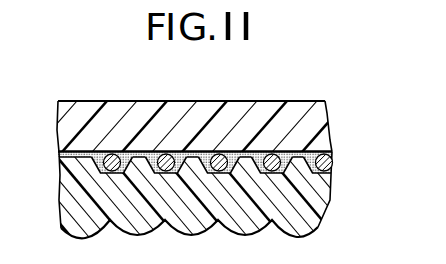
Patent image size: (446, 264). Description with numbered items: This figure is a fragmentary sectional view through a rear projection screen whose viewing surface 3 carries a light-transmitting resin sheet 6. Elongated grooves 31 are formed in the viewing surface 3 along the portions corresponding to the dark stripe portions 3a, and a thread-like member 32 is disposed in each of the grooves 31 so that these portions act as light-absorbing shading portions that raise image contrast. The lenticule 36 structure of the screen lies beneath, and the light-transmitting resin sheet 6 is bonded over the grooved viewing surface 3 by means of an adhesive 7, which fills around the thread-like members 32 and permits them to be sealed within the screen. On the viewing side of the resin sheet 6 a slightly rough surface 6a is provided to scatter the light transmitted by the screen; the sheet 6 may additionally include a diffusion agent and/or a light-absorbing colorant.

The viewing surface 3 is at (333, 147).
The dark stripe portions 3a is at (302, 147).
The light-transmitting resin sheet 6 is at (325, 104).
The slightly rough surface 6a is at (300, 101).
The adhesive 7 is at (333, 168).
The elongated grooves 31 is at (261, 160).
The thread-like member 32 is at (326, 214).
The lenticule 36 is at (262, 166).